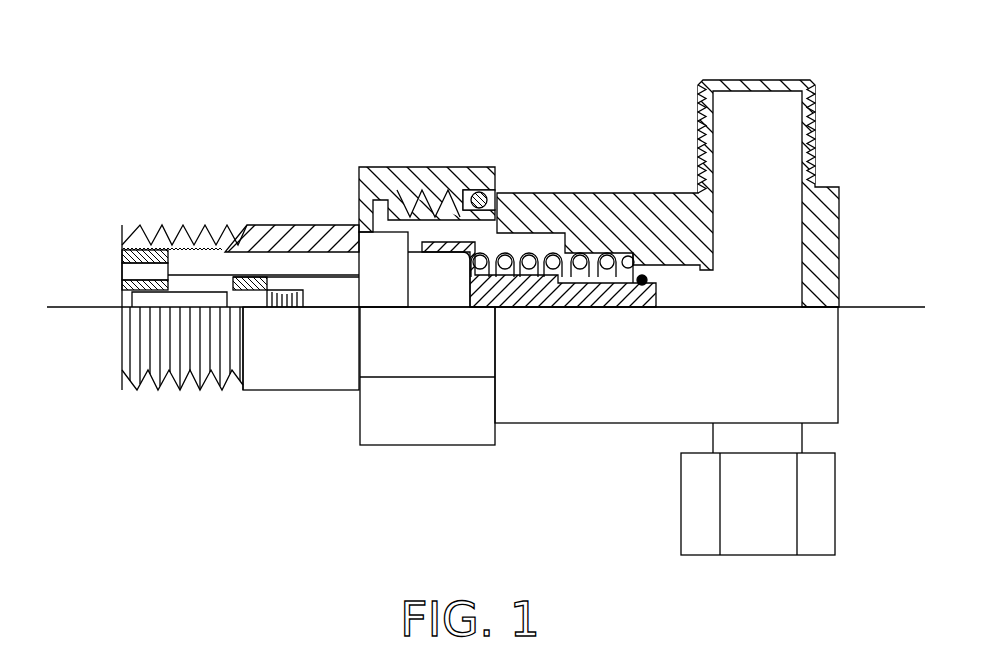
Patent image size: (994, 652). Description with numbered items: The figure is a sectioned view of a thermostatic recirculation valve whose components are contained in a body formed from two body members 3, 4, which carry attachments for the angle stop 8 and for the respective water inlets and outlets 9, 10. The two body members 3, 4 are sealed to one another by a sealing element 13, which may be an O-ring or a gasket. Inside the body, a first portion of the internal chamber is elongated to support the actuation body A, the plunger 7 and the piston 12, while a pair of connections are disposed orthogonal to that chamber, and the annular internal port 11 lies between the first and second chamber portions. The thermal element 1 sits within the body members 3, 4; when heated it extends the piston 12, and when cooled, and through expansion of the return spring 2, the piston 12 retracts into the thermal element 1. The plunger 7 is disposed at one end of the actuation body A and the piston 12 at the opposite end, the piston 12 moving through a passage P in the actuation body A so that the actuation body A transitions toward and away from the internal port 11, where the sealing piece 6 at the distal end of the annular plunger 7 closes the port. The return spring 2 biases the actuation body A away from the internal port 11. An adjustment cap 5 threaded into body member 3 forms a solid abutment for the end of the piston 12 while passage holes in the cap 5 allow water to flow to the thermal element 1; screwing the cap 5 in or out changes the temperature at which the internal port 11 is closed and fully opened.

The thermal element 1 is at (380, 268).
The return spring 2 is at (553, 258).
The body member 3 is at (288, 222).
The body member 4 is at (613, 193).
The adjustment cap 5 is at (122, 297).
The sealing piece 6 is at (637, 272).
The plunger 7 is at (440, 242).
The angle stop 8 is at (757, 545).
The water inlet or outlet 9 is at (813, 107).
The water inlet or outlet 10 is at (175, 225).
The internal port 11 is at (693, 287).
The piston 12 is at (157, 298).
The sealing element 13 is at (470, 192).
The passage P is at (233, 297).
The actuation body A is at (393, 338).